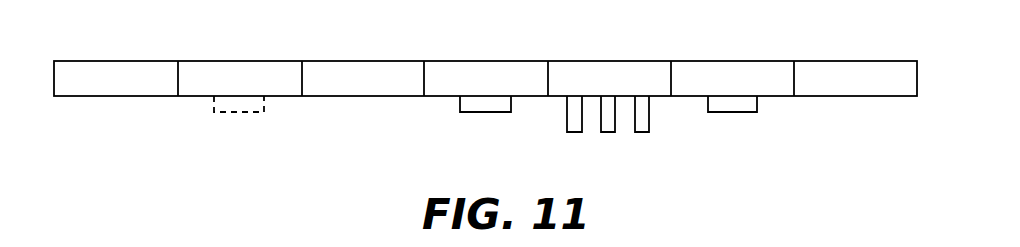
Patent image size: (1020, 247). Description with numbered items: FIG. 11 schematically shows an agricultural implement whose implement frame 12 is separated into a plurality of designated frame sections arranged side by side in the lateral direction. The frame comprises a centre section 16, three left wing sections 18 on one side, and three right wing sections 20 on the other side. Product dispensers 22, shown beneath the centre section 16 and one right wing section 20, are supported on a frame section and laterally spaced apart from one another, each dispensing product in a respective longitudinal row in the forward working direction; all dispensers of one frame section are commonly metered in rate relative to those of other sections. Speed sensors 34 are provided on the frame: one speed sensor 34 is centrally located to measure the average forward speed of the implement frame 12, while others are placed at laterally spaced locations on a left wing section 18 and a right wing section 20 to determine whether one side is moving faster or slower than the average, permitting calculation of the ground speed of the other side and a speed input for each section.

The implement frame 12 is at (918, 75).
The centre section 16 is at (484, 61).
The left wing section 18 is at (117, 61).
The right wing section 20 is at (607, 61).
The product dispenser 22 is at (566, 123).
The speed sensor 34 is at (240, 114).